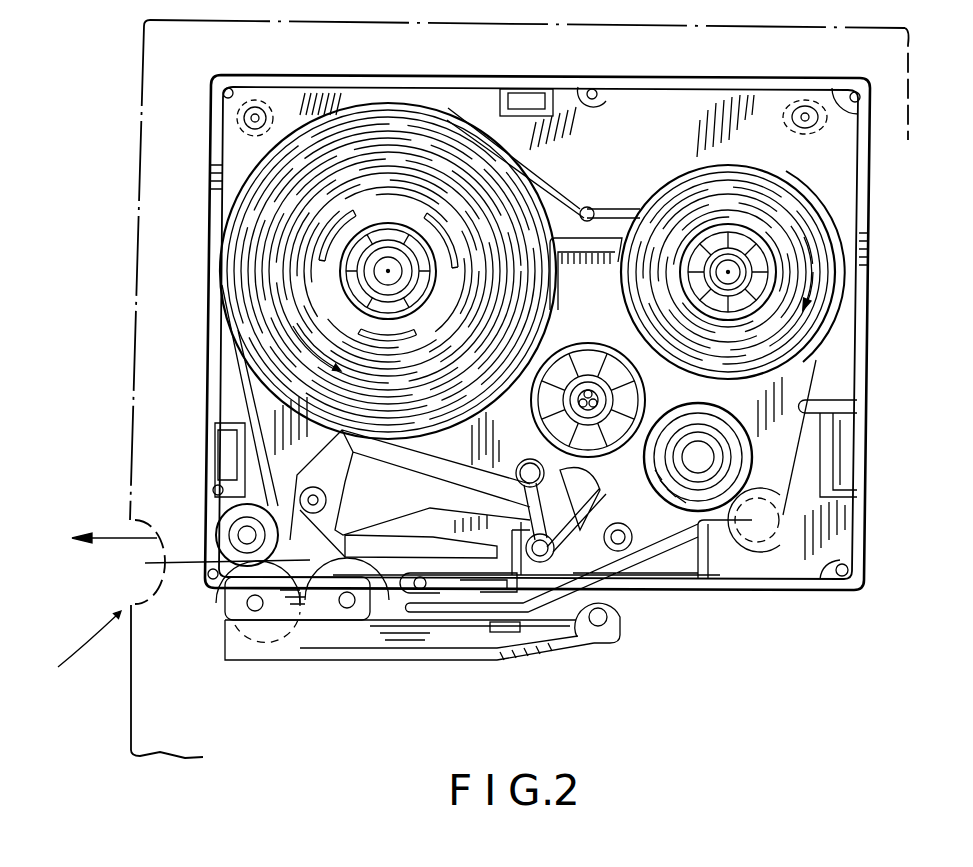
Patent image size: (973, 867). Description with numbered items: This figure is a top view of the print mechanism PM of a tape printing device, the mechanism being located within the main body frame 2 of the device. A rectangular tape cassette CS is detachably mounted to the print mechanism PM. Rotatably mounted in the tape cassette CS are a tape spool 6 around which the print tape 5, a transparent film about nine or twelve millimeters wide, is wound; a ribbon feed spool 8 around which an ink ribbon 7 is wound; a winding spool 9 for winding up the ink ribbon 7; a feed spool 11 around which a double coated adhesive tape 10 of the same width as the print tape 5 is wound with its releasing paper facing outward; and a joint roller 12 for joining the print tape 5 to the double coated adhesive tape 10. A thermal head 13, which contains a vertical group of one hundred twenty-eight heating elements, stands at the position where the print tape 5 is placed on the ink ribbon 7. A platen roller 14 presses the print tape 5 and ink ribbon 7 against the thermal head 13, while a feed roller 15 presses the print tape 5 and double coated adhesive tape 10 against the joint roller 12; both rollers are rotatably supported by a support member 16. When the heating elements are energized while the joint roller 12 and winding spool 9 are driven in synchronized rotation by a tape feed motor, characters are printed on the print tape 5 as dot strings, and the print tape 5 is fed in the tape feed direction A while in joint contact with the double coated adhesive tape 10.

The main body frame 2 is at (129, 224).
The tape feed direction A is at (112, 538).
The print mechanism PM is at (76, 658).
The tape cassette CS is at (874, 304).
The print tape 5 is at (745, 180).
The tape spool 6 is at (748, 230).
The ink ribbon 7 is at (706, 401).
The ribbon feed spool 8 is at (745, 462).
The winding spool 9 is at (603, 360).
The double coated adhesive tape 10 is at (375, 122).
The feed spool 11 is at (388, 223).
The joint roller 12 is at (213, 518).
The thermal head 13 is at (410, 552).
The platen roller 14 is at (338, 625).
The feed roller 15 is at (244, 632).
The support member 16 is at (493, 648).